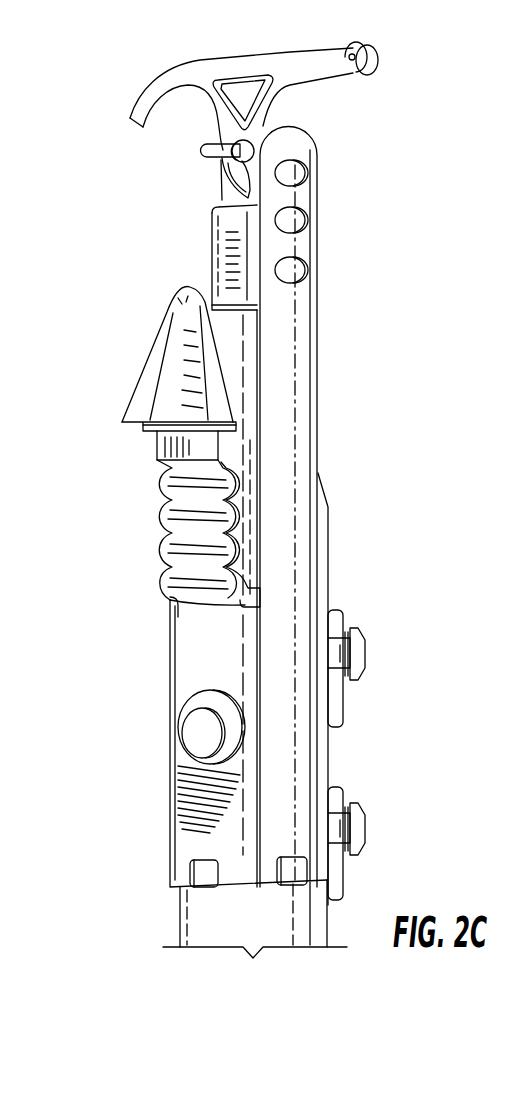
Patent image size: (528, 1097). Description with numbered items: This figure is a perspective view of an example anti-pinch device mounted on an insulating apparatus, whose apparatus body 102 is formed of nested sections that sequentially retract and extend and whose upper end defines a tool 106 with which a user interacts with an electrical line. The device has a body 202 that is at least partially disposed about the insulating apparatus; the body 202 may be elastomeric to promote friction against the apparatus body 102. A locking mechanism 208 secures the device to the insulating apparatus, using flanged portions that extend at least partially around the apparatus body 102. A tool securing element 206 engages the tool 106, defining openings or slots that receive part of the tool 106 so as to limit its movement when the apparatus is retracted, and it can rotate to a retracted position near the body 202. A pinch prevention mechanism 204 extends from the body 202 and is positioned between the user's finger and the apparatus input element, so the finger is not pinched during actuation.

The body 102 is at (169, 924).
The tool 106 is at (216, 101).
The body 202 is at (193, 738).
The pinch prevention mechanism 204 is at (89, 494).
The tool securing element 206 is at (319, 233).
The locking mechanism 208 is at (372, 623).